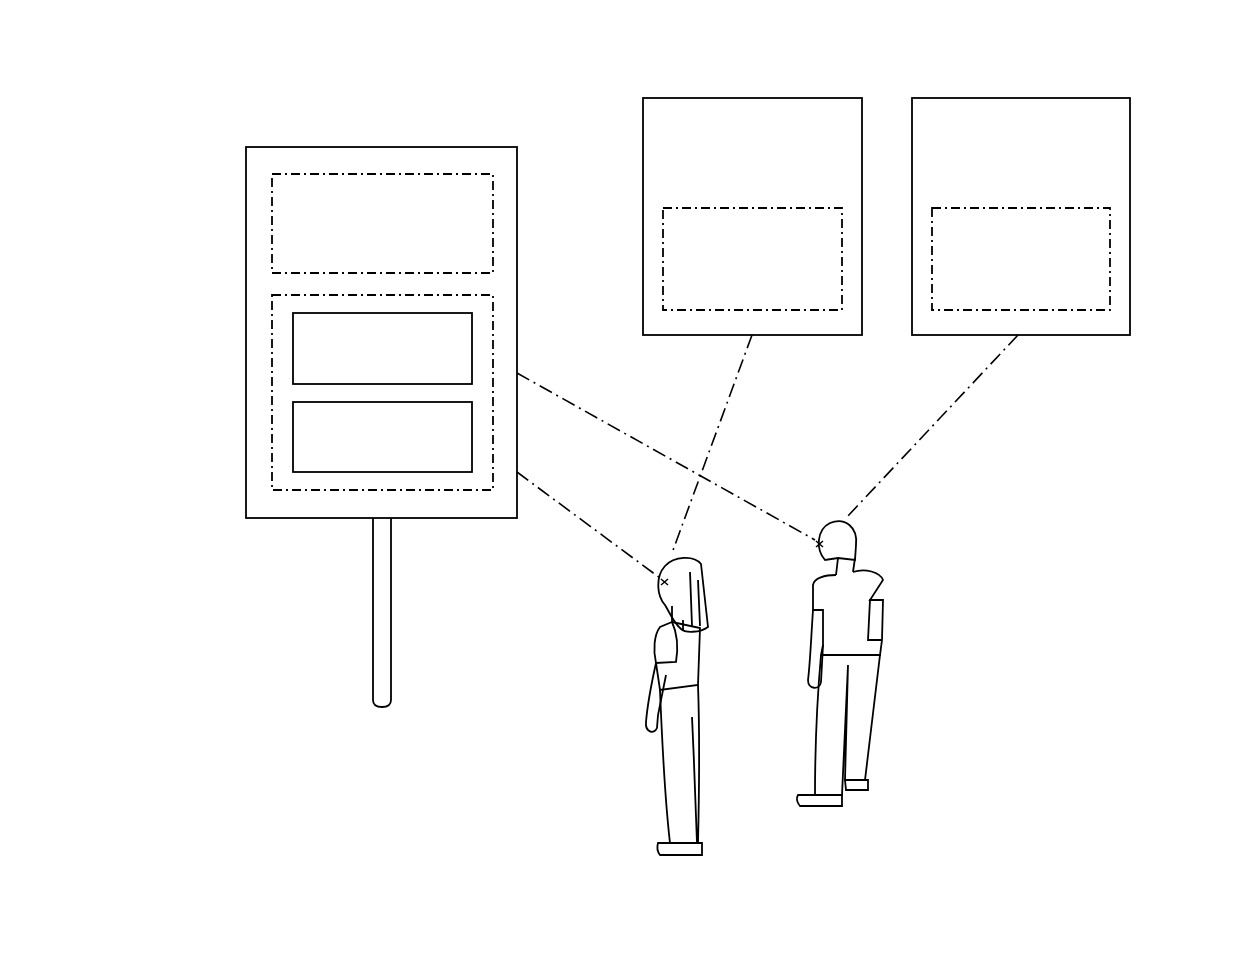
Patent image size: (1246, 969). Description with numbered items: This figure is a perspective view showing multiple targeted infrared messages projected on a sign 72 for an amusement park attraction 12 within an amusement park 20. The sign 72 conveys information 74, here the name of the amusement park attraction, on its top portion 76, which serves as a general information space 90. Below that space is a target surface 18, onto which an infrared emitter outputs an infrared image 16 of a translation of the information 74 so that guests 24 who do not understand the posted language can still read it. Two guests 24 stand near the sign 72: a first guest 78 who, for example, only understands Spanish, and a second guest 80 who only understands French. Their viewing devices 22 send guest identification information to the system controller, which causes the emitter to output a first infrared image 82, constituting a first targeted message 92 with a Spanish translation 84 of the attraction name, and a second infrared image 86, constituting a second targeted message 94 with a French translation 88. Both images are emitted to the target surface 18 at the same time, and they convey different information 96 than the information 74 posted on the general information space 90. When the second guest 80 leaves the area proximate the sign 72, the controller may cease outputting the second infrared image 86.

The amusement park attraction 12 is at (365, 128).
The infrared image 16 is at (279, 392).
The target surface 18 is at (272, 308).
The amusement park 20 is at (573, 78).
The viewing devices 22 is at (665, 582).
The guests 24 is at (757, 688).
The sign 72 is at (258, 205).
The information 74 is at (438, 175).
The top portion 76 is at (520, 298).
The first guest 78 is at (865, 572).
The second guest 80 is at (672, 740).
The first infrared image 82 is at (293, 355).
The Spanish translation 84 is at (1089, 259).
The second infrared image 86 is at (293, 443).
The French translation 88 is at (761, 301).
The general information space 90 is at (306, 175).
The first targeted message 92 is at (1112, 262).
The second targeted message 94 is at (807, 312).
The different information 96 is at (279, 392).